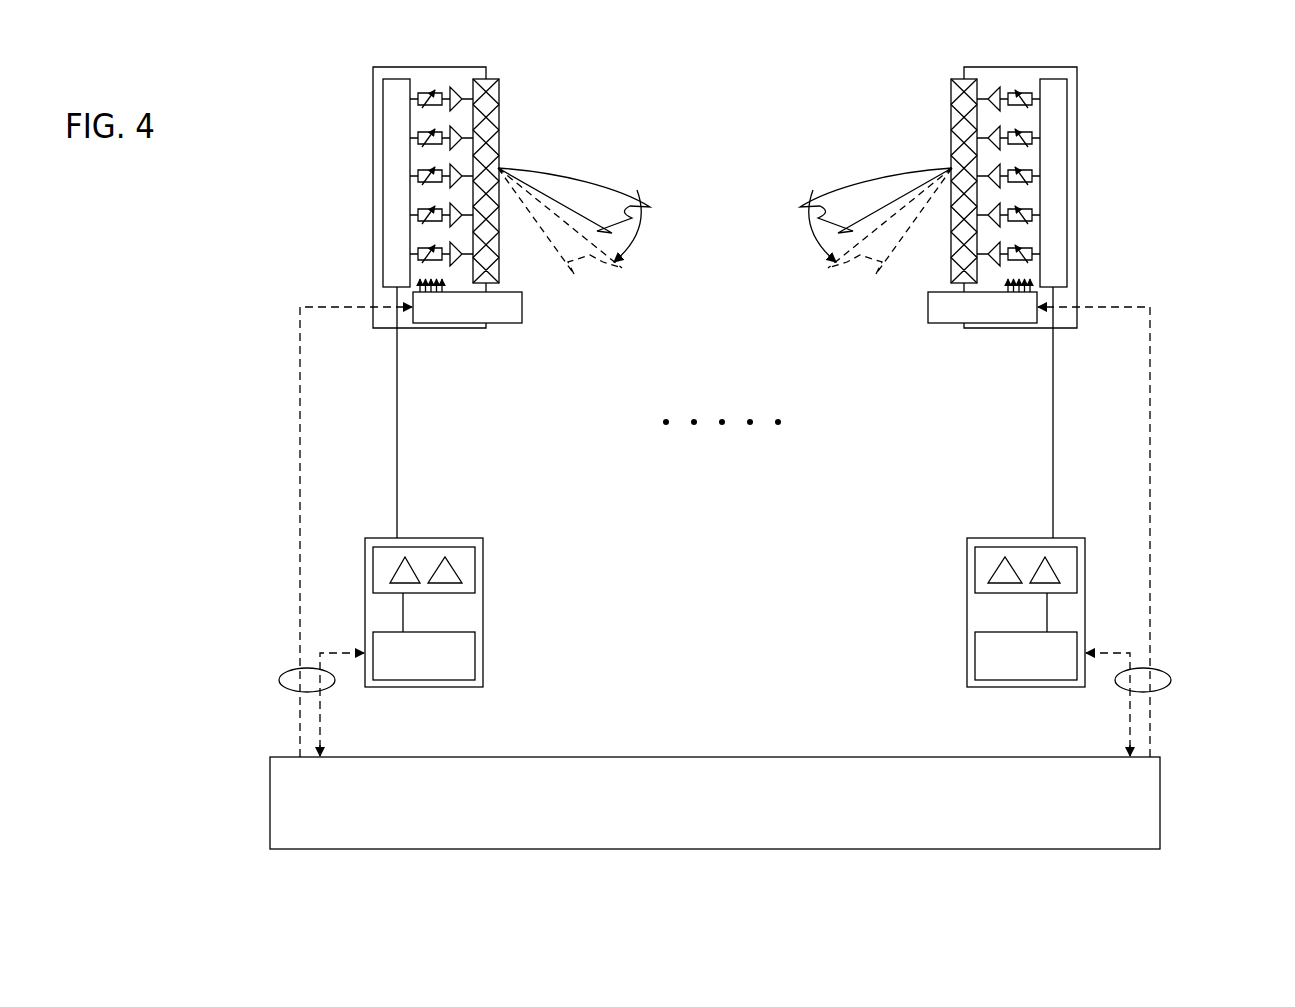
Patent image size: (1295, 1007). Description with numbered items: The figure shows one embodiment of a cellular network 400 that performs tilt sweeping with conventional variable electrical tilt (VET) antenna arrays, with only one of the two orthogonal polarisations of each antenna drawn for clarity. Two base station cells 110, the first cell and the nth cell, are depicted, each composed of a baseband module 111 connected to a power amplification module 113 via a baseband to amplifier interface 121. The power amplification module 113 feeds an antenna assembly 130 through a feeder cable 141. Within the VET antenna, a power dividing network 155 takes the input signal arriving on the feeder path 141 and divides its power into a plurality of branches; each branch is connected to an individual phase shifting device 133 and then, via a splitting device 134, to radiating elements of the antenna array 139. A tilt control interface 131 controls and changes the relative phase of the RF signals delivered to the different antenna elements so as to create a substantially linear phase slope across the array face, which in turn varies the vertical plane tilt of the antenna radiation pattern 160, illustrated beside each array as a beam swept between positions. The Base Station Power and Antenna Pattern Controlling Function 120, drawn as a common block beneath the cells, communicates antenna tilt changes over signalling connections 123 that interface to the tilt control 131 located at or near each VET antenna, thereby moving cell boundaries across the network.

The cellular network 400 is at (751, 86).
The antenna assembly 130 is at (516, 80).
The antenna array 139 is at (500, 88).
The phase shifting device 133 is at (402, 103).
The splitting device 134 is at (428, 113).
The power dividing network 155 is at (381, 231).
The tilt control interface 131 is at (497, 322).
The antenna radiation pattern 160 is at (590, 206).
The feeder cable 141 is at (395, 483).
The base station cell 110 is at (386, 531).
The power amplification module 113 is at (390, 566).
The baseband to amplifier interface 121 is at (399, 610).
The baseband module 111 is at (384, 647).
The signalling connection 123 is at (279, 680).
The Base Station Power and Antenna Pattern Controlling Function 120 is at (680, 775).